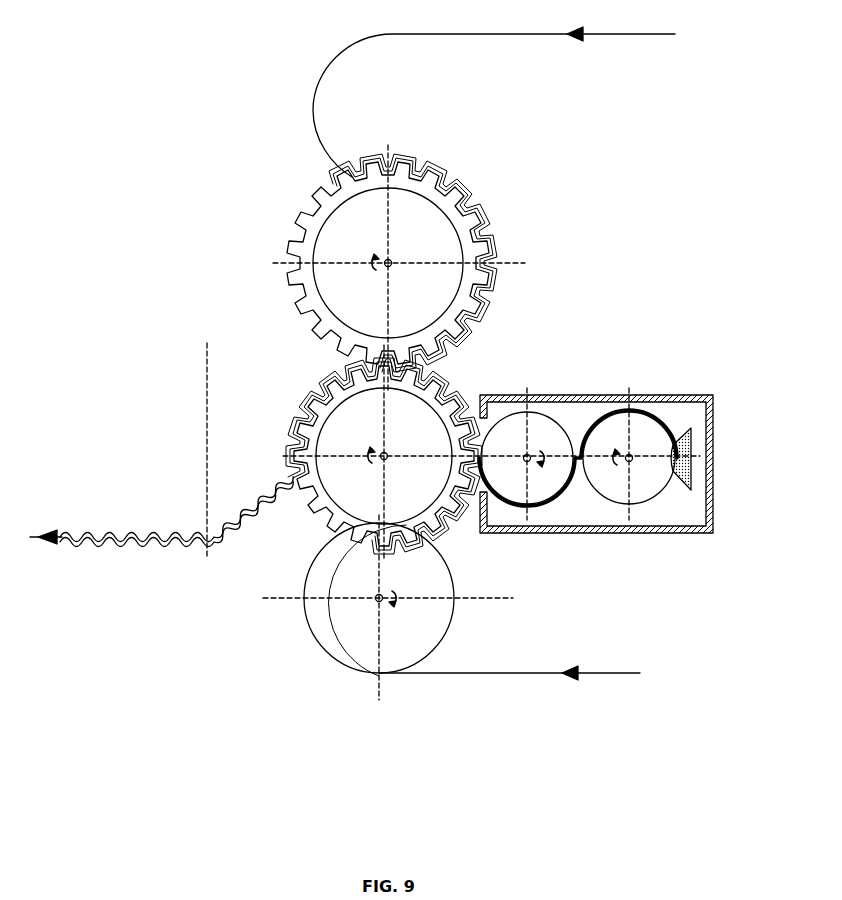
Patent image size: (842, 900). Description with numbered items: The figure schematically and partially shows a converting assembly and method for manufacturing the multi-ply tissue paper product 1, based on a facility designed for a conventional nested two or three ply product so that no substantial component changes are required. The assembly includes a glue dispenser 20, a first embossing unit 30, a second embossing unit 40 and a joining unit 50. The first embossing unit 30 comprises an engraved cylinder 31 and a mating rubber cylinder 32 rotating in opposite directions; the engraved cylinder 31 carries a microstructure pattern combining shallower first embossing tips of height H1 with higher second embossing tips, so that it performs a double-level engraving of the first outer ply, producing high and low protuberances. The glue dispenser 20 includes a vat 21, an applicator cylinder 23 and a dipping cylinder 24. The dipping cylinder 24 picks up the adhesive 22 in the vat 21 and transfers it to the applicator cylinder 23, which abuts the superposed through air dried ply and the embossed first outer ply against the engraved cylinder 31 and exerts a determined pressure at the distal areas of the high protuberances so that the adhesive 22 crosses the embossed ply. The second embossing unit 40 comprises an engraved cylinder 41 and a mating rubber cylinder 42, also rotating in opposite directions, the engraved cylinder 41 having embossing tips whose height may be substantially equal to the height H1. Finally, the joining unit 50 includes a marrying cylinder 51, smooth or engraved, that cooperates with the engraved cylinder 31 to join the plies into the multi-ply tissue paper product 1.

The multi-ply tissue paper product 1 is at (30, 537).
The glue dispenser 20 is at (614, 388).
The vat 21 is at (691, 470).
The adhesive 22 is at (655, 420).
The applicator cylinder 23 is at (536, 492).
The dipping cylinder 24 is at (641, 492).
The first embossing unit 30 is at (293, 551).
The engraved cylinder 31 is at (418, 406).
The mating rubber cylinder 32 is at (318, 622).
The second embossing unit 40 is at (258, 137).
The engraved cylinder 41 is at (455, 249).
The mating rubber cylinder 42 is at (457, 118).
The joining unit 50 is at (280, 381).
The marrying cylinder 51 is at (170, 407).
The height of first embossing tips H1 is at (429, 502).